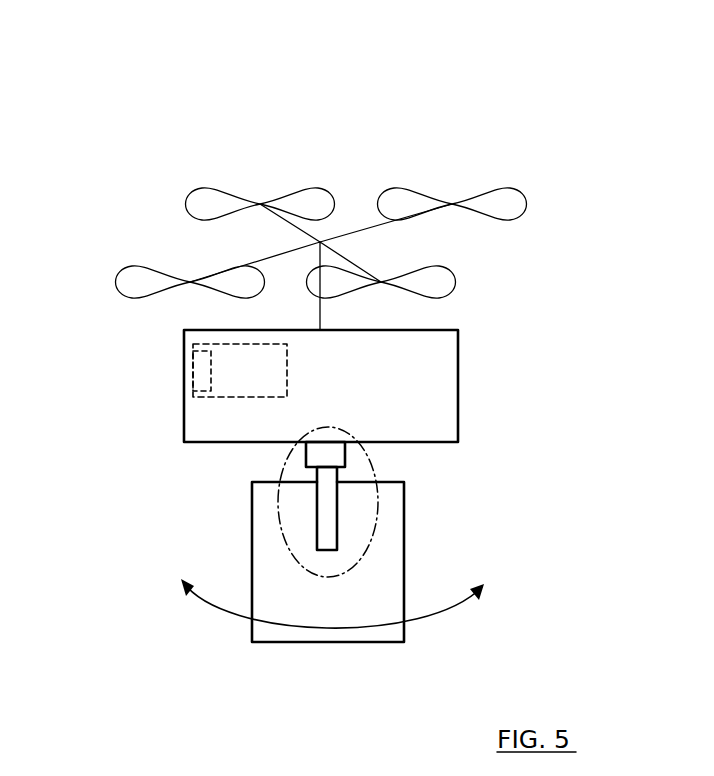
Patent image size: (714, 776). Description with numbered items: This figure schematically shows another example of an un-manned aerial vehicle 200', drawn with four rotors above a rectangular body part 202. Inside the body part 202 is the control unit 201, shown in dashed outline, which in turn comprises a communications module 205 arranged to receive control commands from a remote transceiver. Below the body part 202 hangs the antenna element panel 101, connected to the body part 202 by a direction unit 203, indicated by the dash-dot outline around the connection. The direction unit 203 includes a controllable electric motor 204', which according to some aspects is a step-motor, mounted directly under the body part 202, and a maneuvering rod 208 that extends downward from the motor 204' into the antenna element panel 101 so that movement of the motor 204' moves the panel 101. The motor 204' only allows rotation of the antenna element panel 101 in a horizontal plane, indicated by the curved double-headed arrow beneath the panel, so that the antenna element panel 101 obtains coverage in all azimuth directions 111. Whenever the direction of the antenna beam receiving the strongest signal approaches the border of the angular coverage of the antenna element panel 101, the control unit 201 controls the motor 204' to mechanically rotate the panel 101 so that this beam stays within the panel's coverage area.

The aerial vehicle 200' is at (294, 197).
The body part 202 is at (432, 372).
The control unit 201 is at (223, 398).
The communications module 205 is at (196, 382).
The controllable electric motor 204' is at (240, 461).
The maneuvering rod 208 is at (325, 508).
The antenna element panel 101 is at (387, 582).
The direction unit 203 is at (277, 535).
The azimuth direction 111 is at (245, 617).